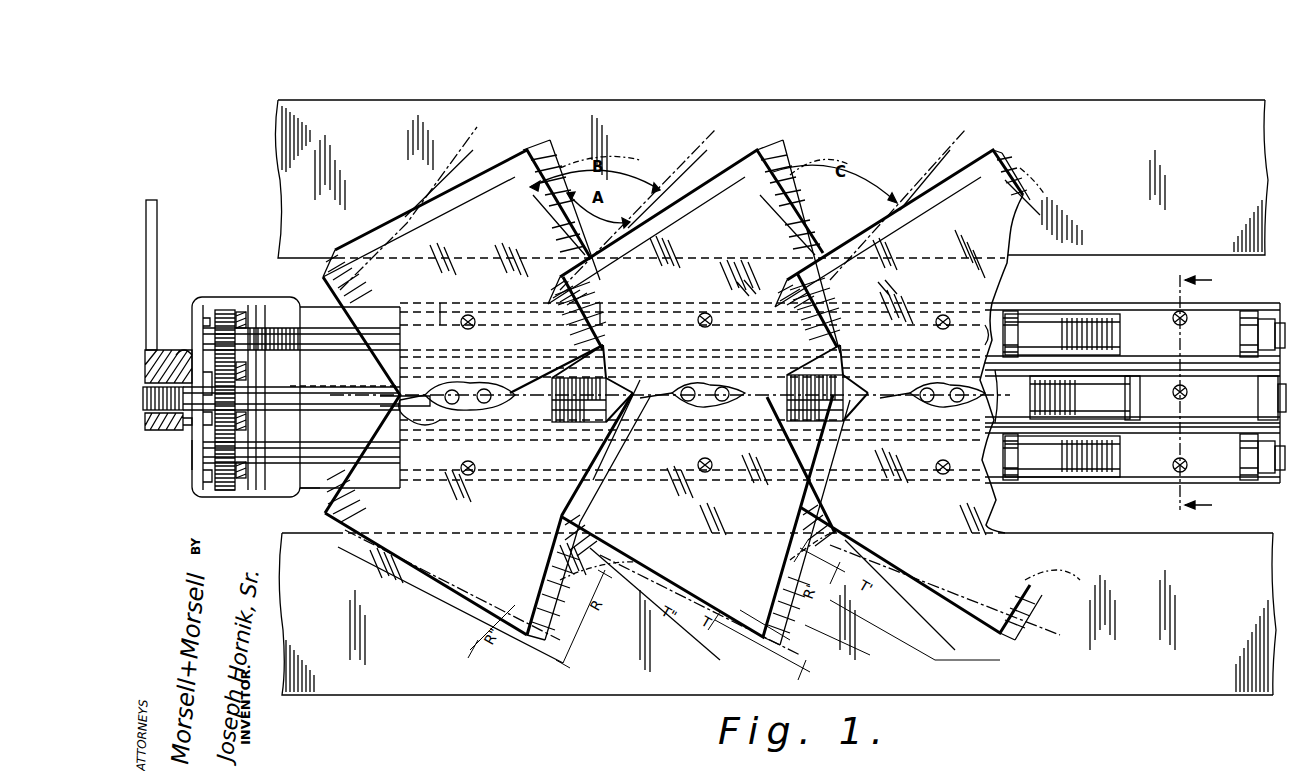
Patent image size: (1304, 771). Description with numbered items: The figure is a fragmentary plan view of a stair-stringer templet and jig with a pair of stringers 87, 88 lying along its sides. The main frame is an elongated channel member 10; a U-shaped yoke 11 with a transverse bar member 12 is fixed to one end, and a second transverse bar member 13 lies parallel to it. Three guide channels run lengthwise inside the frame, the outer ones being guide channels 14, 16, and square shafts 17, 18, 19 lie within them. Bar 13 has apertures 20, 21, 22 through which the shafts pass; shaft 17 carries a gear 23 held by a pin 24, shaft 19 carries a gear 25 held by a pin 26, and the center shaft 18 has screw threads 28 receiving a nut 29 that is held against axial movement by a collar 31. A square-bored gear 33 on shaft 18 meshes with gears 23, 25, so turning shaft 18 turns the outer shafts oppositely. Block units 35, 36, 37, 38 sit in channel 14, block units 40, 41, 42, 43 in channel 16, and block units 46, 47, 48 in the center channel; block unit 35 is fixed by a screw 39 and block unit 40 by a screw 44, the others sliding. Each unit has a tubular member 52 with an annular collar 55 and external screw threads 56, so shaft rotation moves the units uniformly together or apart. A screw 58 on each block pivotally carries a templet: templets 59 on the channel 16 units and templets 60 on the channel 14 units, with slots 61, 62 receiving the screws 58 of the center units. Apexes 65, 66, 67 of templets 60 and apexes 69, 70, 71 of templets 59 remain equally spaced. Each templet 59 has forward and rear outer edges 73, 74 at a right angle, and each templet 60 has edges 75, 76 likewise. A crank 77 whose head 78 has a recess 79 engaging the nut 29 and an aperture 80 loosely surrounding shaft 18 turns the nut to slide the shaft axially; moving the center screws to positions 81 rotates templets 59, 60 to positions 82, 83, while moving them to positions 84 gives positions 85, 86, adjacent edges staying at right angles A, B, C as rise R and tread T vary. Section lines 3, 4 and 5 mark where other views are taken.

The section line 3 is at (488, 360).
The section line 4 is at (1187, 394).
The drive worm shaft 5 is at (133, 412).
The elongated channel member 10 is at (318, 494).
The U-shaped yoke 11 is at (225, 298).
The transverse bar member 12 is at (194, 450).
The transverse bar member 13 is at (247, 426).
The guide channel 14 is at (1050, 478).
The guide channel 16 is at (1030, 314).
The square shaft 17 is at (300, 458).
The square shaft 18 is at (346, 407).
The square shaft 19 is at (332, 346).
The aperture 20 is at (247, 472).
The aperture 21 is at (247, 370).
The aperture 22 is at (247, 320).
The gear 23 is at (224, 490).
The pin 24 is at (212, 478).
The gear 25 is at (226, 312).
The pin 26 is at (204, 322).
The screw threads 28 is at (315, 386).
The nut 29 is at (186, 427).
The collar 31 is at (208, 379).
The gear 33 is at (208, 422).
The block unit 35 is at (400, 480).
The block unit 36 is at (620, 490).
The block unit 37 is at (430, 412).
The block unit 38 is at (1125, 470).
The screw 39 is at (452, 475).
The block unit 40 is at (403, 314).
The block unit 41 is at (620, 310).
The block unit 42 is at (996, 332).
The block unit 43 is at (1126, 310).
The screw 44 is at (458, 312).
The block unit 46 is at (770, 408).
The block unit 47 is at (1020, 392).
The block unit 48 is at (1220, 398).
The tubular member 52 is at (1270, 292).
The annular collar 55 is at (1010, 312).
The external screw threads 56 is at (1086, 318).
The screw 58 is at (461, 324).
The templet 59 is at (400, 230).
The templet 60 is at (464, 546).
The slot 61 is at (478, 380).
The slot 62 is at (488, 412).
The outer apex 65 is at (537, 640).
The outer apex 66 is at (768, 645).
The outer apex 67 is at (1000, 640).
The apex 69 is at (527, 150).
The apex 70 is at (757, 150).
The apex 71 is at (993, 150).
The forward outer edge 73 is at (1044, 166).
The rear outer edge 74 is at (470, 194).
The forward outer edge 75 is at (1050, 628).
The rear outer edge 76 is at (470, 595).
The crank 77 is at (146, 290).
The head 78 is at (152, 432).
The recess 79 is at (178, 368).
The aperture 80 is at (146, 362).
The dot and dash positions 81 is at (450, 382).
The rotated position 82 is at (807, 207).
The rotated position 83 is at (1062, 610).
The positions 84 is at (512, 400).
The rotated position 85 is at (470, 153).
The rotated position 86 is at (472, 636).
The stringer 87 is at (355, 112).
The stringer 88 is at (362, 698).